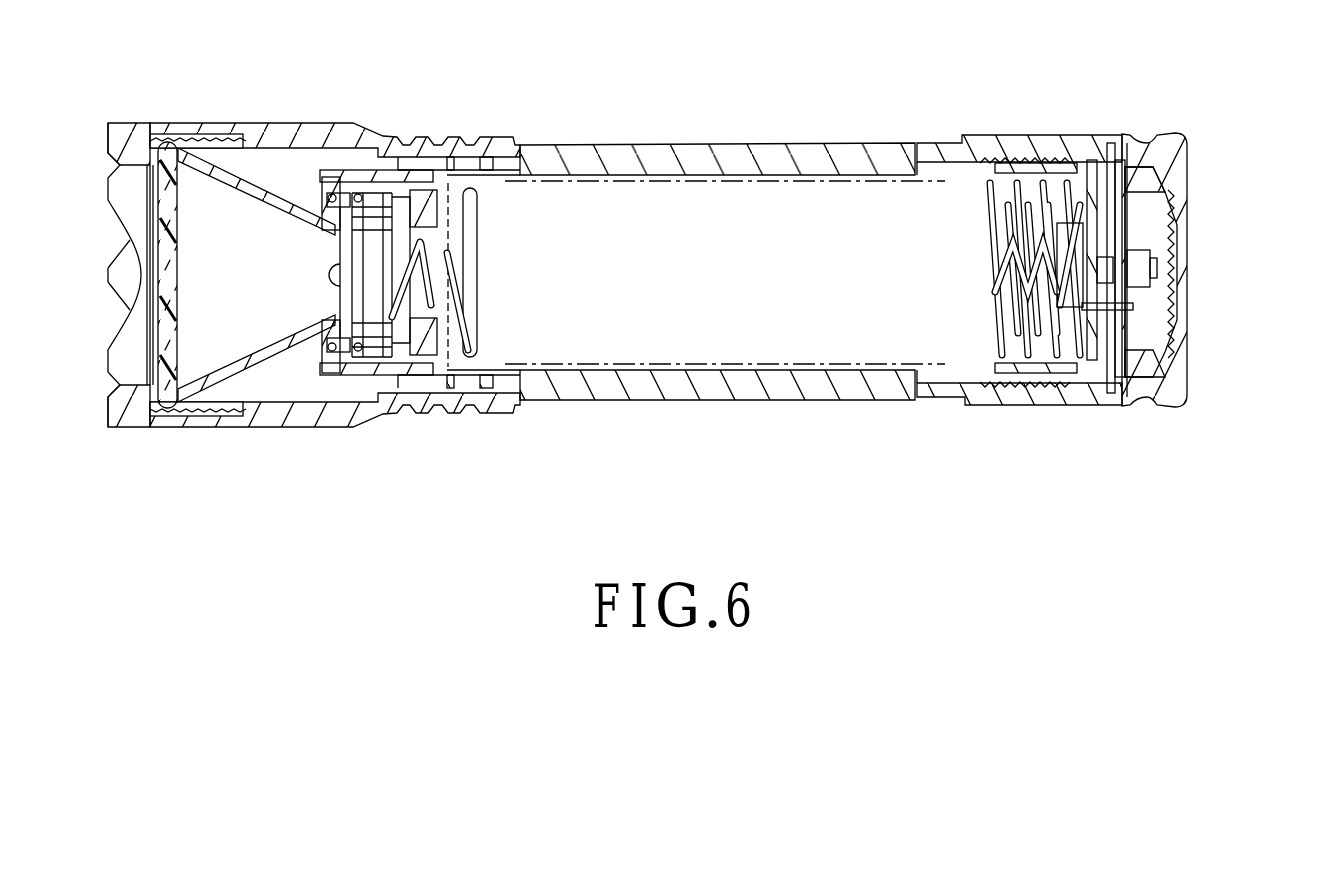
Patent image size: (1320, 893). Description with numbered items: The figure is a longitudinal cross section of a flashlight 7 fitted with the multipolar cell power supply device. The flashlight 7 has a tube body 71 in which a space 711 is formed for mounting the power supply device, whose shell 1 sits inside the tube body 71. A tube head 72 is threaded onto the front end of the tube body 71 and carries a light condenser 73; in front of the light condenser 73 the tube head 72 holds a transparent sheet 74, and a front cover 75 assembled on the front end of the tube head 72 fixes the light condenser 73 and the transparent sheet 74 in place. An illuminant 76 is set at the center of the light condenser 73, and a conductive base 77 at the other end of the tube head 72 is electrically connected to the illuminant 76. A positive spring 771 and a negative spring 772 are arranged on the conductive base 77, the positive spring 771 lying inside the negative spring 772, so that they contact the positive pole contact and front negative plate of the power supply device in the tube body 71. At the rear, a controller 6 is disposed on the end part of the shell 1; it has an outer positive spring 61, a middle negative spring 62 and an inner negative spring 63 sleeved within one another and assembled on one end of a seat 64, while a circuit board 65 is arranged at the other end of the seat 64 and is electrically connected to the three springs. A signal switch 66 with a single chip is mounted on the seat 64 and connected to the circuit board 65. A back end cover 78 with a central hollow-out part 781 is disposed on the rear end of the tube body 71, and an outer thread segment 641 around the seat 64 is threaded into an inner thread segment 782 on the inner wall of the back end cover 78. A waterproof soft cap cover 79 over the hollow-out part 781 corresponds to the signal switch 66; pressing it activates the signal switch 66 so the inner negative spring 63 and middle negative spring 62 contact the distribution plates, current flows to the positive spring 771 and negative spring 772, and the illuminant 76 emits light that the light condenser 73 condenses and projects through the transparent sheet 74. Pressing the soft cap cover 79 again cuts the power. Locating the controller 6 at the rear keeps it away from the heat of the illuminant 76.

The shell 1 is at (663, 337).
The controller 6 is at (1128, 380).
The flashlight 7 is at (607, 140).
The tube body 71 is at (658, 160).
The space 711 is at (778, 176).
The tube head 72 is at (337, 135).
The light condenser 73 is at (292, 165).
The transparent sheet 74 is at (165, 330).
The front cover 75 is at (150, 145).
The illuminant 76 is at (328, 283).
The conductive base 77 is at (363, 330).
The positive spring 771 is at (464, 190).
The negative spring 772 is at (478, 288).
The outer positive spring 61 is at (988, 193).
The middle negative spring 62 is at (1013, 292).
The inner negative spring 63 is at (1040, 340).
The seat 64 is at (1027, 172).
The outer thread segment 641 is at (1062, 165).
The circuit board 65 is at (1117, 183).
The signal switch 66 is at (1150, 267).
The back end cover 78 is at (1167, 152).
The waterproof soft cap cover 79 is at (1177, 230).
The hollow-out part 781 is at (1180, 357).
The inner thread segment 782 is at (1082, 385).